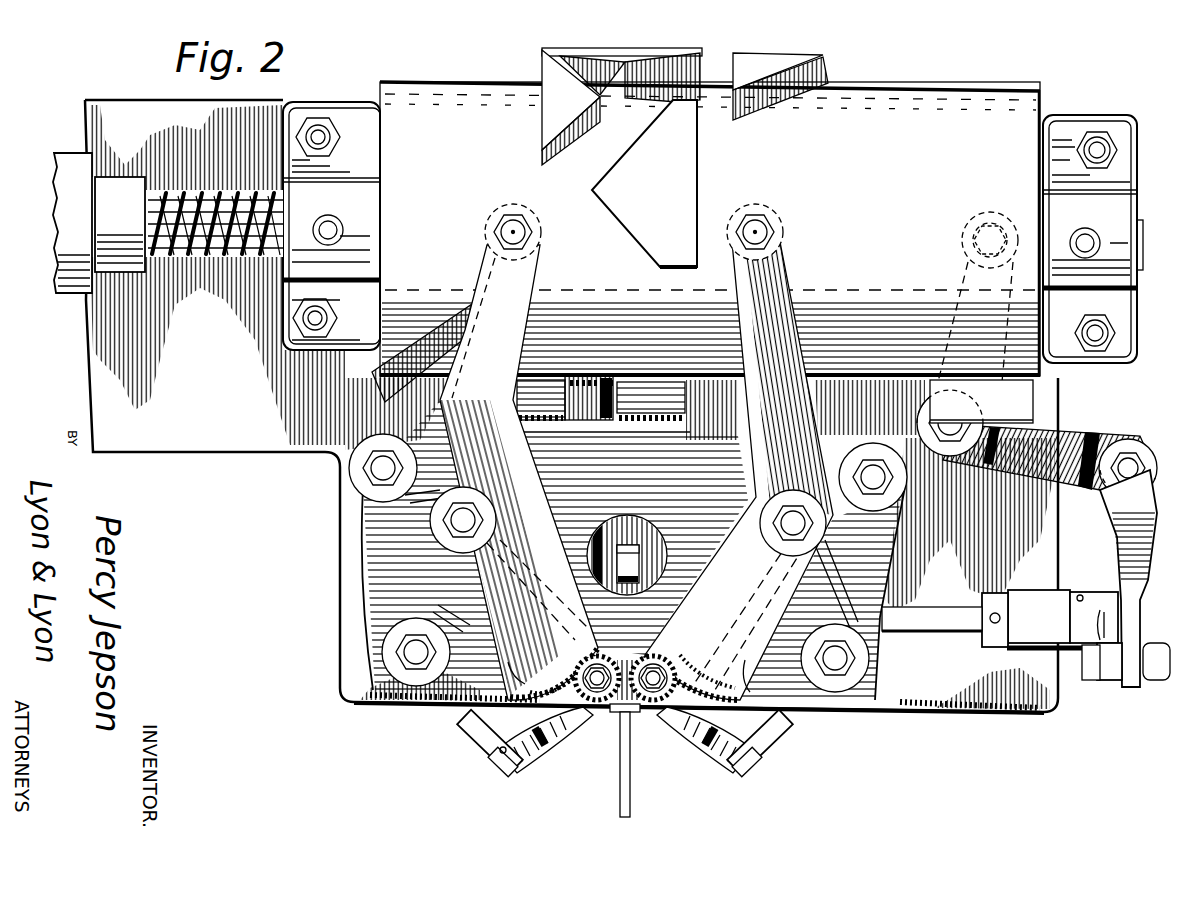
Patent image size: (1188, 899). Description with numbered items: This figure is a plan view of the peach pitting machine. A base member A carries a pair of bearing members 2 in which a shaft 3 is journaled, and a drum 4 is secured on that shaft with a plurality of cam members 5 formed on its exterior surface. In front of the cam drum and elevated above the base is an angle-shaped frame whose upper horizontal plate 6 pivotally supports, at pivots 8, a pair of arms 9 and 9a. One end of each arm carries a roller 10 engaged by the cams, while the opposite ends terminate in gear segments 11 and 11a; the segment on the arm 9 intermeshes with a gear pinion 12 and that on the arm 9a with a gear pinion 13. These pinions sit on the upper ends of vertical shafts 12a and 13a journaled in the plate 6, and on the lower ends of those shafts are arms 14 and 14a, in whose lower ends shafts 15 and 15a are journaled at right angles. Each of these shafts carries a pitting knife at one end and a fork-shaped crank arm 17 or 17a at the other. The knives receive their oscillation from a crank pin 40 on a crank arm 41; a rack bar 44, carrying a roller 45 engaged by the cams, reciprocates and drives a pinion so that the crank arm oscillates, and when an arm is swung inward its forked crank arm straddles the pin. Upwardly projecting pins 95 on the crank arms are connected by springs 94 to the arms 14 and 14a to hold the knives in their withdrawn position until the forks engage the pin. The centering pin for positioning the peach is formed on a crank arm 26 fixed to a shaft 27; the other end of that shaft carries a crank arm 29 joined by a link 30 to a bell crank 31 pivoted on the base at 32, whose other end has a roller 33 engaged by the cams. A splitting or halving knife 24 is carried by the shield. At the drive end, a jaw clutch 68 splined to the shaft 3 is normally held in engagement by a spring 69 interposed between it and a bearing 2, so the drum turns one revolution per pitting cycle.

The base member A is at (283, 455).
The bearing members 2 is at (295, 185).
The shaft 3 is at (148, 216).
The drum 4 is at (1005, 96).
The cam members 5 is at (690, 128).
The upper horizontal plate 6 is at (382, 574).
The pivots 8 is at (460, 525).
The arm 9 is at (762, 453).
The arm 9a is at (500, 462).
The roller 10 is at (490, 220).
The gear segments 11 is at (738, 676).
The arm end 11a is at (512, 665).
The gear pinion 12 is at (652, 703).
The shaft 12a is at (707, 665).
The gear pinion 13 is at (593, 703).
The shaft 13a is at (557, 674).
The arm 14 is at (705, 745).
The arm 14a is at (548, 737).
The shaft 15 is at (758, 764).
The shaft 15a is at (492, 764).
The fork-shaped crank arm 17 is at (788, 728).
The fork-shaped crank arm 17a is at (462, 722).
The splitting or halving knife 24 is at (616, 790).
The crank arm 26 is at (633, 586).
The shaft 27 is at (955, 610).
The crank arm 29 is at (1108, 598).
The link 30 is at (1119, 548).
The bell crank 31 is at (1108, 440).
The pivot 32 is at (935, 408).
The roller 33 is at (990, 225).
The crank pin 40 is at (590, 550).
The crank arm 41 is at (628, 542).
The rack bar 44 is at (636, 424).
The roller 45 is at (582, 420).
The jaw clutch 68 is at (65, 168).
The spring 69 is at (148, 200).
The springs 94 is at (540, 748).
The rods or pins 95 is at (506, 758).